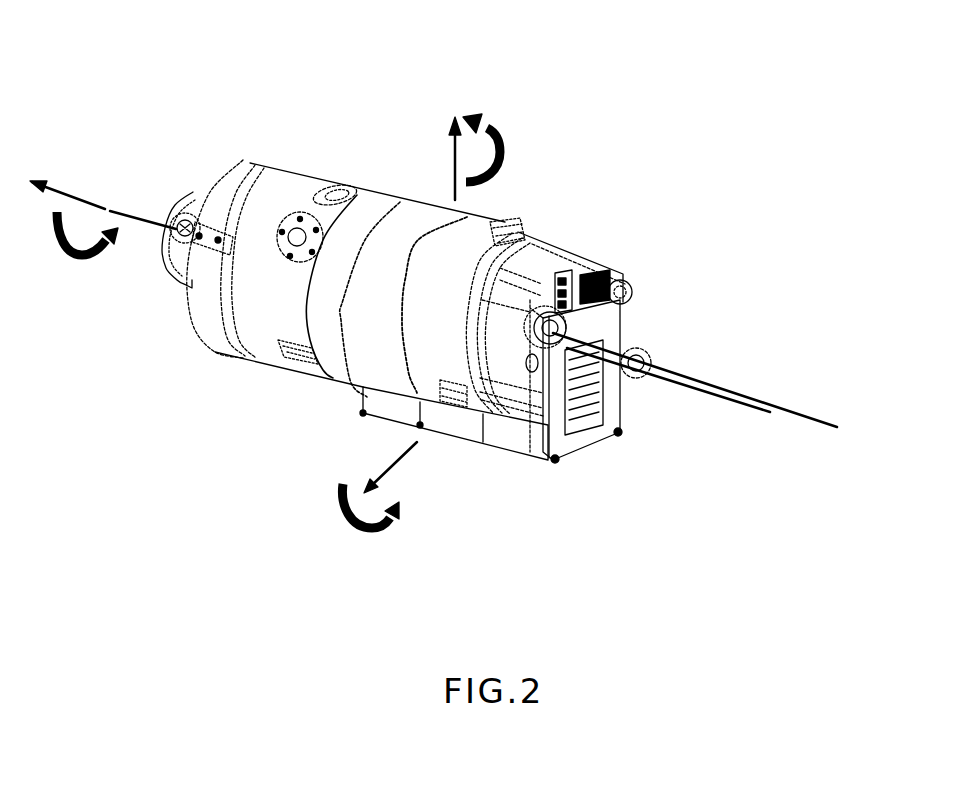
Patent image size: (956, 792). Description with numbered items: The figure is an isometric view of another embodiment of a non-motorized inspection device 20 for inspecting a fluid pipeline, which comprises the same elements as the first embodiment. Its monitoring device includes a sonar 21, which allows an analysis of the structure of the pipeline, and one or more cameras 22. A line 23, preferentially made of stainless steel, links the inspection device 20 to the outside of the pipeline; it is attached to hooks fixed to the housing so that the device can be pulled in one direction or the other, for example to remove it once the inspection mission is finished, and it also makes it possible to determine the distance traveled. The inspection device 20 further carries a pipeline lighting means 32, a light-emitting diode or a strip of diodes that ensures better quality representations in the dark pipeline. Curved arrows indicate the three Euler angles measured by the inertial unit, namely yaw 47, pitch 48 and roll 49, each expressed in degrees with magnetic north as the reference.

The inspection device 20 is at (171, 66).
The sonar 21 is at (200, 200).
The camera 22 is at (277, 268).
The line 23 is at (128, 212).
The pipeline lighting means 32 is at (344, 190).
The yaw 47 is at (503, 140).
The pitch 48 is at (352, 520).
The roll 49 is at (90, 255).